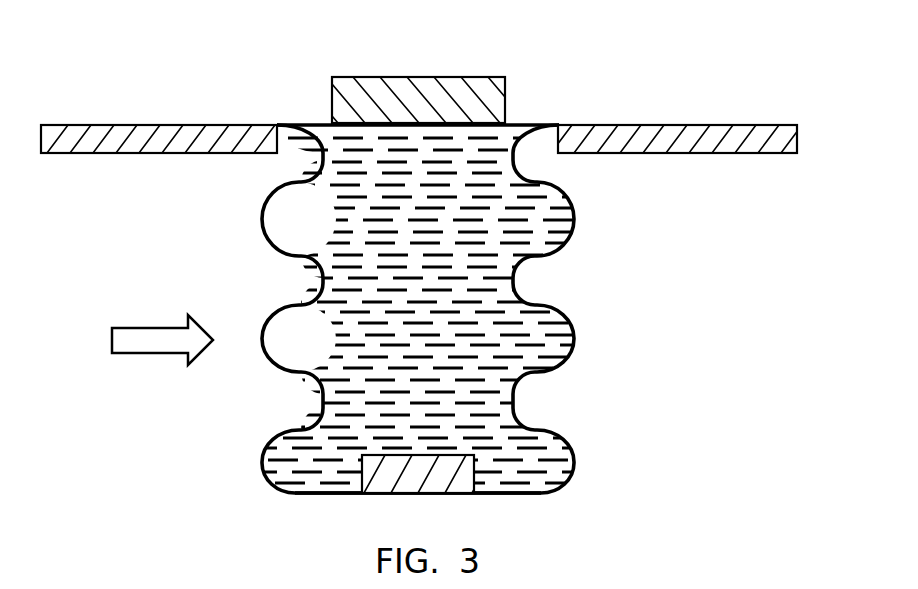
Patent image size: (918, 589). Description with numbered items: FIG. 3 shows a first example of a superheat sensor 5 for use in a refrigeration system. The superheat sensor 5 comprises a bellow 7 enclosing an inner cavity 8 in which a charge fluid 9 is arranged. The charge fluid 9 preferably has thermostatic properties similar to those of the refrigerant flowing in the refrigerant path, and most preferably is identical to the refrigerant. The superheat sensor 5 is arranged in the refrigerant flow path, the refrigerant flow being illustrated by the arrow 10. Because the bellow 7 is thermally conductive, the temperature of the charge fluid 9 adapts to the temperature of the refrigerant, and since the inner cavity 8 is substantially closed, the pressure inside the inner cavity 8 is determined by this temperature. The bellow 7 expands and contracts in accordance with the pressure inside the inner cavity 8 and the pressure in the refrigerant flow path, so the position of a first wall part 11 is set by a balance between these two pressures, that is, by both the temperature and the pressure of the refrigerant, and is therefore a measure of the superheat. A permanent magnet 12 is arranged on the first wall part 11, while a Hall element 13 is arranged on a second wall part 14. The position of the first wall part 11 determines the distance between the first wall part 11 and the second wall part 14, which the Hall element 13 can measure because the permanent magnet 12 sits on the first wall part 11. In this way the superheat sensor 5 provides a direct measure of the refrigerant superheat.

The superheat sensor 5 is at (421, 263).
The bellow 7 is at (566, 362).
The inner cavity 8 is at (557, 458).
The charge fluid 9 is at (483, 303).
The arrow 10 is at (142, 342).
The first wall part 11 is at (328, 495).
The permanent magnet 12 is at (457, 483).
The Hall element 13 is at (369, 82).
The second wall part 14 is at (315, 123).